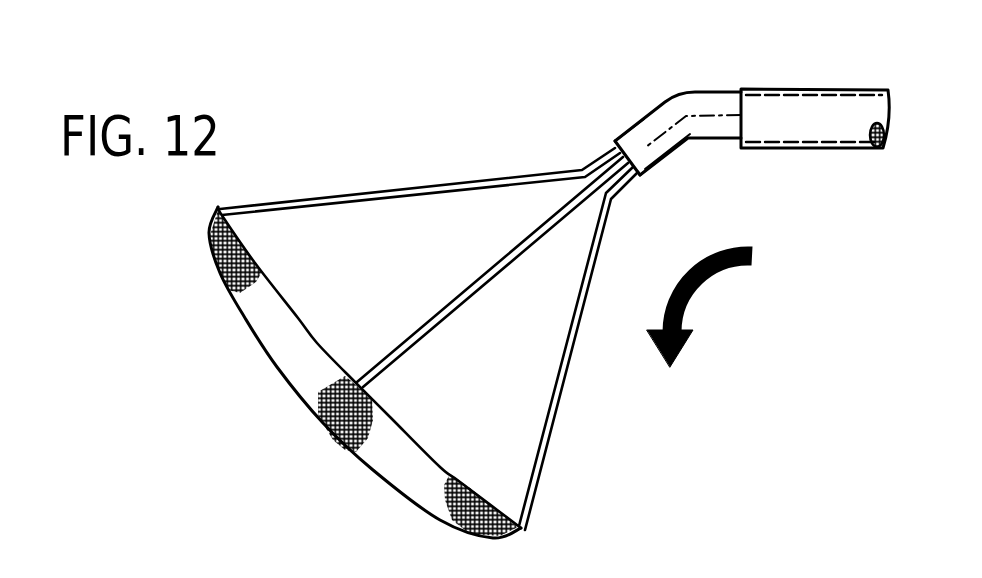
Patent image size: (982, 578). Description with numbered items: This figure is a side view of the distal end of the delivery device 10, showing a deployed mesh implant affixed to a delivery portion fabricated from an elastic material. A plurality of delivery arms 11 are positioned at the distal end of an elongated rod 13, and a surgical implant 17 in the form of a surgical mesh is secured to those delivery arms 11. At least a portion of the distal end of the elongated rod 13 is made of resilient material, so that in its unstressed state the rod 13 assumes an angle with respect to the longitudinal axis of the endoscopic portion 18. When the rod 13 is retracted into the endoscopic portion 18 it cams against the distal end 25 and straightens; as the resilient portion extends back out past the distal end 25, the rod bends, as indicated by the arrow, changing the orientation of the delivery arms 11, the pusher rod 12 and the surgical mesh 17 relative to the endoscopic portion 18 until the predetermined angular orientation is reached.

The delivery device 10 is at (480, 289).
The delivery arms 11 is at (538, 435).
The pusher rod 12 is at (445, 308).
The elongated rod 13 is at (638, 128).
The surgical implant 17 is at (278, 358).
The endoscopic portion 18 is at (826, 148).
The distal end 25 is at (740, 90).